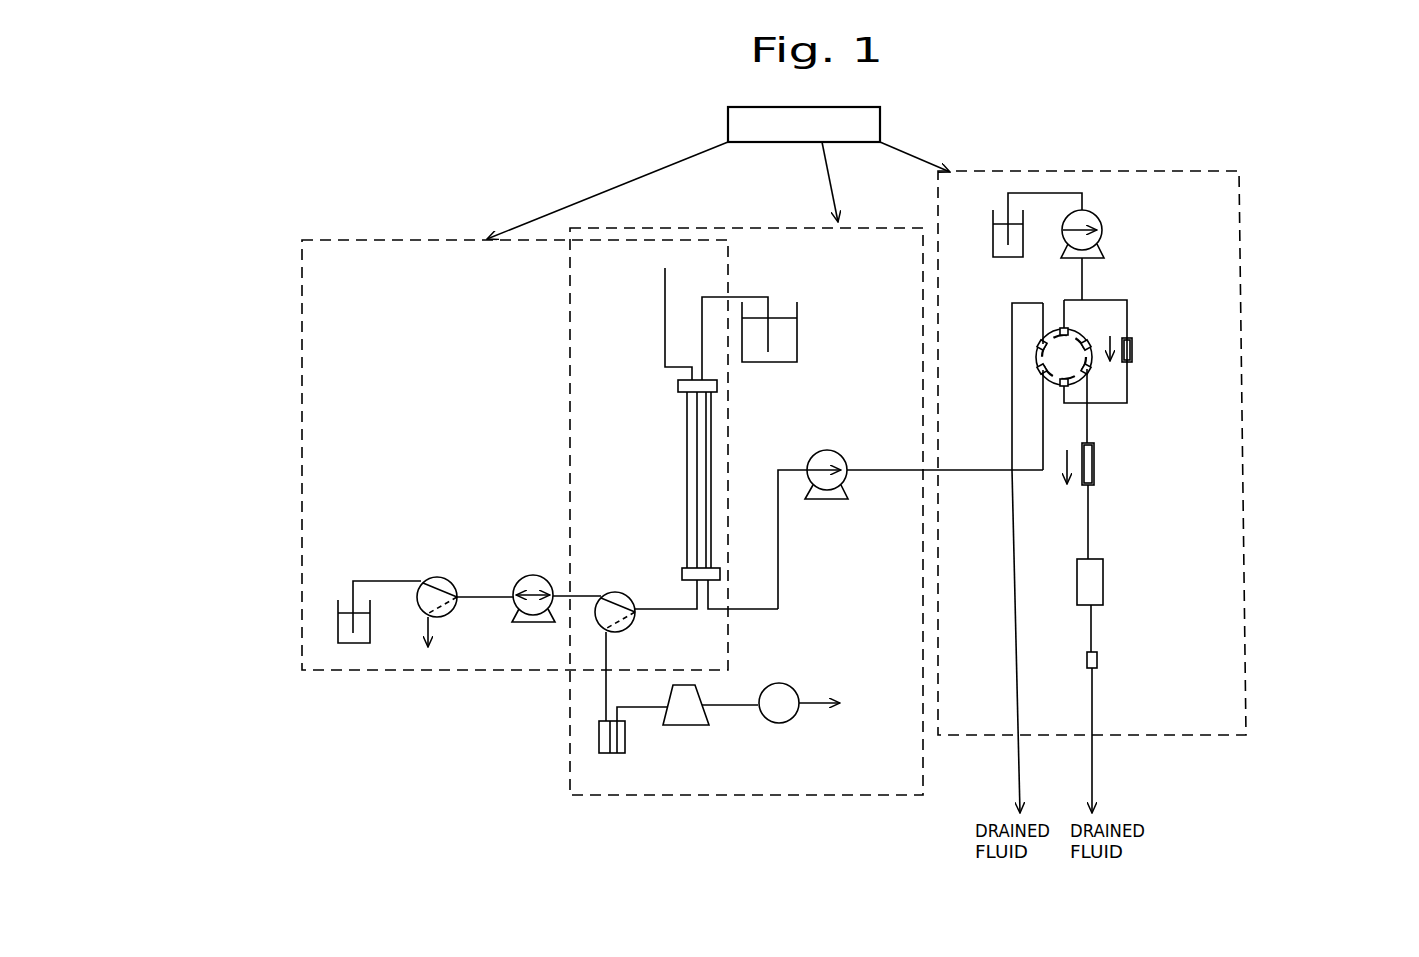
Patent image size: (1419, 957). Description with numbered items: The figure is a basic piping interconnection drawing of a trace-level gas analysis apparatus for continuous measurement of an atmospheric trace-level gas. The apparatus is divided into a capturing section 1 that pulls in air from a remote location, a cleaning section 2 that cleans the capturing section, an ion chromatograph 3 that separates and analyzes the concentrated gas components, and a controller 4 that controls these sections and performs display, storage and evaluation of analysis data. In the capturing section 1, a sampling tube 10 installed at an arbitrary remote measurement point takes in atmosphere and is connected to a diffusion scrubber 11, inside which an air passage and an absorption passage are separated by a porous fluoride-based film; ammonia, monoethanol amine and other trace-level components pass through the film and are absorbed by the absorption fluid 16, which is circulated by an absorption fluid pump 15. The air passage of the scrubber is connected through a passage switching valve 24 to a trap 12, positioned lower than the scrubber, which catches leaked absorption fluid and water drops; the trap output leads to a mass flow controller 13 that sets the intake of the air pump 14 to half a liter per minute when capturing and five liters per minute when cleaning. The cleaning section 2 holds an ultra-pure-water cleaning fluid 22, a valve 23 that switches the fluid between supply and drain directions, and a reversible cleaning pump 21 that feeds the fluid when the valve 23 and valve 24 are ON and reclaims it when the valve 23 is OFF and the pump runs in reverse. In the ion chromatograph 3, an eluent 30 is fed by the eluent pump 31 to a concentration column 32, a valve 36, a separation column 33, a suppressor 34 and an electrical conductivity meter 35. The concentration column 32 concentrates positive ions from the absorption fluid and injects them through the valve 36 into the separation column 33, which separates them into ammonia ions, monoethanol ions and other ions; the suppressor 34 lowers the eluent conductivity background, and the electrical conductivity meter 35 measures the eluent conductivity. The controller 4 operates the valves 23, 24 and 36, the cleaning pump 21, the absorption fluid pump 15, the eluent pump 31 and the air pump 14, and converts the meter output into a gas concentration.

The capturing section 1 is at (746, 498).
The cleaning section 2 is at (505, 445).
The ion chromatograph 3 is at (1092, 441).
The controller 4 is at (880, 119).
The sampling tube 10 is at (665, 317).
The diffusion scrubber 11 is at (687, 430).
The trap 12 is at (608, 753).
The mass flow controller 13 is at (681, 725).
The air pump 14 is at (779, 723).
The absorption fluid pump 15 is at (813, 457).
The absorption fluid 16 is at (797, 335).
The cleaning pump 21 is at (528, 575).
The cleaning fluid 22 is at (338, 626).
The valve 23 is at (426, 614).
The passage switching valve 24 is at (598, 620).
The eluent 30 is at (993, 228).
The eluent pump 31 is at (1098, 217).
The concentration column 32 is at (1133, 350).
The separation column 33 is at (1095, 465).
The suppressor 34 is at (1103, 582).
The electrical conductivity meter 35 is at (1097, 662).
The valve 36 is at (1037, 360).